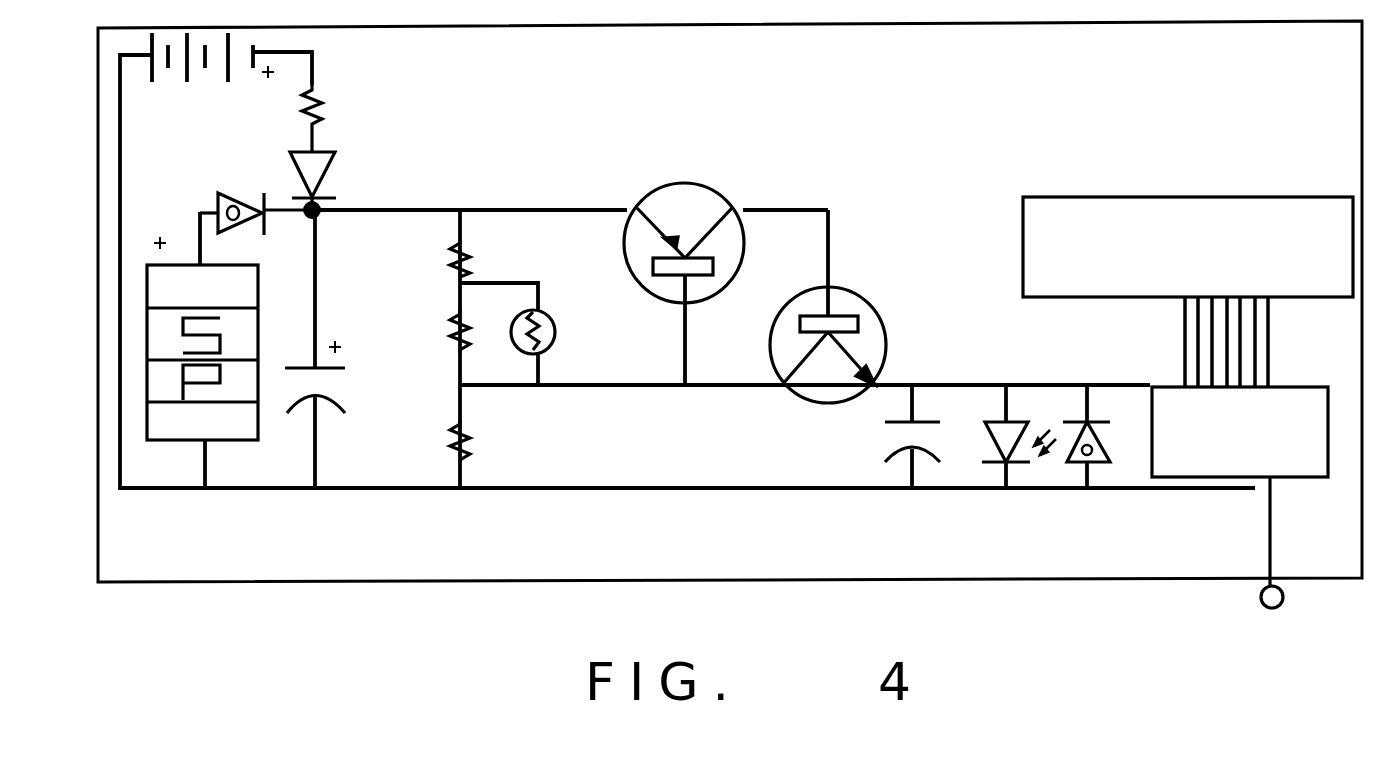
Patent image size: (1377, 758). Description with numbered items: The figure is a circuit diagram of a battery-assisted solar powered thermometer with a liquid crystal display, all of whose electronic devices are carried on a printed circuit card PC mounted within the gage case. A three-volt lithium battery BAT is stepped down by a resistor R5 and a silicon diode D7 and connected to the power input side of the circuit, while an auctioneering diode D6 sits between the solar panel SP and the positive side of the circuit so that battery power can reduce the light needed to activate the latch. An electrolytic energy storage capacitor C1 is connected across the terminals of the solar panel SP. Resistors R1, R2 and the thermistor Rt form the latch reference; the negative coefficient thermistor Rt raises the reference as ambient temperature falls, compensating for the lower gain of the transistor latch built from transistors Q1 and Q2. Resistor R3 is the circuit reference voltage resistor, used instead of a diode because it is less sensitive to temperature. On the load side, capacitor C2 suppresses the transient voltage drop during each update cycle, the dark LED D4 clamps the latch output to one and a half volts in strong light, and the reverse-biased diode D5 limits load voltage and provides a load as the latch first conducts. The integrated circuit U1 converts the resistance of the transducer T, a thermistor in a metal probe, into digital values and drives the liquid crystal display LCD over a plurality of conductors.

The printed circuit card PC is at (730, 303).
The lithium battery BAT is at (231, 75).
The resistor R5 is at (339, 118).
The silicon diode D7 is at (333, 181).
The auctioneering diode D6 is at (256, 198).
The solar panel SP is at (202, 338).
The energy storage capacitor C1 is at (335, 377).
The resistor R1 is at (433, 258).
The resistor R2 is at (433, 331).
The circuit reference voltage resistor R3 is at (433, 441).
The thermistor Rt is at (552, 332).
The transistor Q1 is at (684, 229).
The transistor Q2 is at (828, 334).
The capacitor C2 is at (882, 442).
The dark LED diode D4 is at (1019, 472).
The diode D5 is at (1085, 472).
The liquid crystal display LCD is at (1188, 292).
The integrated circuit U1 is at (1240, 432).
The transducer T is at (1283, 544).